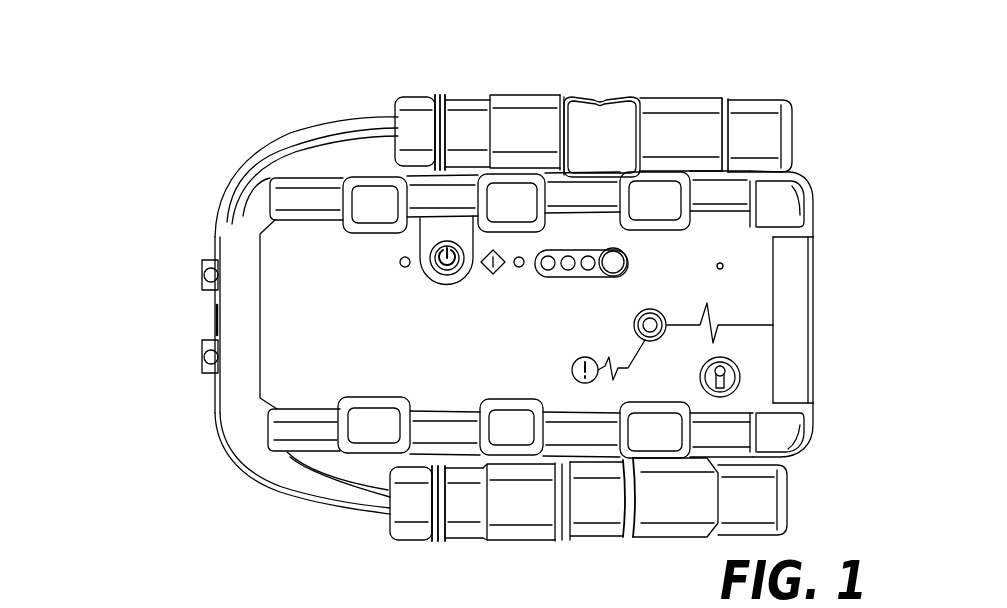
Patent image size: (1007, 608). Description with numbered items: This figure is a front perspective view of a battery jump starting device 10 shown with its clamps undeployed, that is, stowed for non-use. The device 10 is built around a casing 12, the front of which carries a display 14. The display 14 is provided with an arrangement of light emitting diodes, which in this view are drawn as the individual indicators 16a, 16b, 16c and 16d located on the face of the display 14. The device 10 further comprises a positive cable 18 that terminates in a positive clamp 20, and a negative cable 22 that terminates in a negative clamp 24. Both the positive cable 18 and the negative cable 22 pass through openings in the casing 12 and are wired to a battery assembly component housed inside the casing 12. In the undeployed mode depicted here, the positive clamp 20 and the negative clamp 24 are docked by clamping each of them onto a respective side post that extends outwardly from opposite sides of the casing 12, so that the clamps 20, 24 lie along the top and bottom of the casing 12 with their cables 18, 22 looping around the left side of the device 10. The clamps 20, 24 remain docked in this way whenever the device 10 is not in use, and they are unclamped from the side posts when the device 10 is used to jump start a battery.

The battery jump starting device 10 is at (150, 297).
The casing 12 is at (813, 346).
The display 14 is at (740, 288).
The battery charge indicator 16a is at (617, 262).
The indicator light 16b is at (518, 257).
The indicator light 16c is at (404, 256).
The lock button 16d is at (742, 357).
The positive cable 18 is at (332, 492).
The positive clamp 20 is at (522, 513).
The negative cable 22 is at (372, 122).
The negative clamp 24 is at (671, 120).